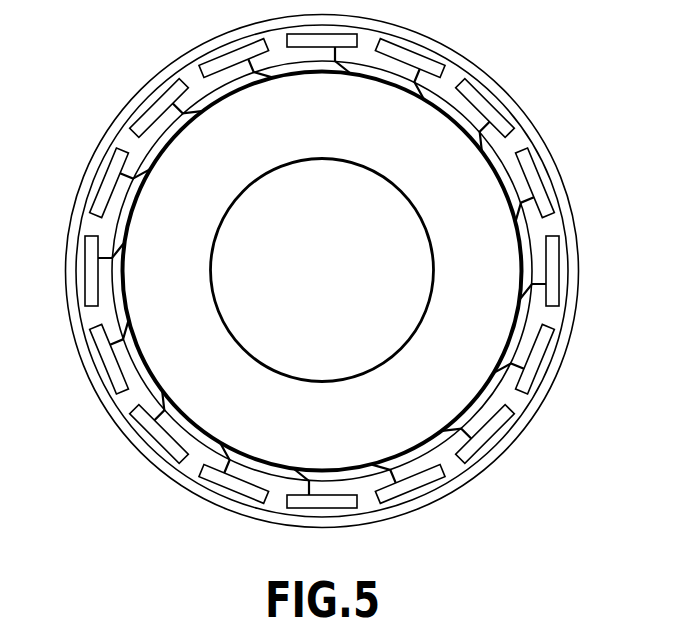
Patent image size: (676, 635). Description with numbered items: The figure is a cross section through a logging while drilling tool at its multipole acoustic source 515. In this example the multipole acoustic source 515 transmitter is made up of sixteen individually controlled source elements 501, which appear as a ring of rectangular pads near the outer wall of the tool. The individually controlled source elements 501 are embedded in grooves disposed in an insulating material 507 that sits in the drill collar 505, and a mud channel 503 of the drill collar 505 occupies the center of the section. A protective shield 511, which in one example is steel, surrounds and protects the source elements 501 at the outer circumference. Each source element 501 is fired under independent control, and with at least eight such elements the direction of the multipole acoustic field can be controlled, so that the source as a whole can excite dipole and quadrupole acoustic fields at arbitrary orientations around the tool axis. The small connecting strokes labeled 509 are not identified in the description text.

The individually controlled source elements 501 is at (538, 373).
The mud channel 503 is at (343, 268).
The drill collar 505 is at (498, 263).
The insulating material 507 is at (520, 140).
The interconnect trace 509 is at (205, 447).
The protective shield 511 is at (377, 526).
The multipole acoustic source 515 is at (126, 56).